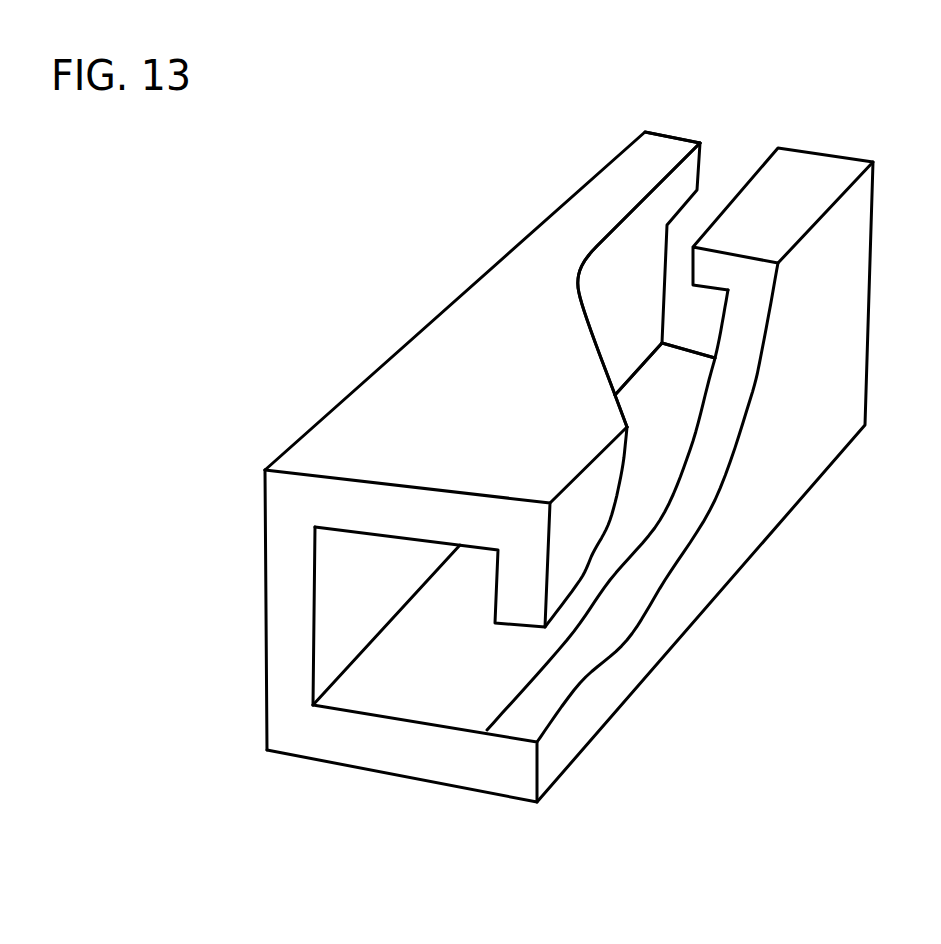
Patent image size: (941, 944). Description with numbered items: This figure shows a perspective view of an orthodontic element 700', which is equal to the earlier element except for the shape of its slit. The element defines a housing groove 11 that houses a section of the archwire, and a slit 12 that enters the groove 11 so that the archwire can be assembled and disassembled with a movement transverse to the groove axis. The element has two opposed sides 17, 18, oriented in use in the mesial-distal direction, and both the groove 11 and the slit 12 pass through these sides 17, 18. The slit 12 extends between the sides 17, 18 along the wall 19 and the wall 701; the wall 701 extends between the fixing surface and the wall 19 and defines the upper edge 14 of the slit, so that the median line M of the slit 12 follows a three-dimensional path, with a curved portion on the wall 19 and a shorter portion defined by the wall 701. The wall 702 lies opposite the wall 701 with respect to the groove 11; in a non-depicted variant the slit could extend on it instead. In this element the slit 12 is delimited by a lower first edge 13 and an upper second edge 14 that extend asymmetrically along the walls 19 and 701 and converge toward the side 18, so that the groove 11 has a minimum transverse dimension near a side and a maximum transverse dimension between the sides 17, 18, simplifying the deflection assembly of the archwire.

The orthodontic element 700' is at (540, 444).
The side 17 is at (675, 127).
The median line M is at (650, 456).
The slit 12 is at (640, 444).
The second edge 14 is at (646, 285).
The wall 701 is at (398, 518).
The wall 702 is at (408, 748).
The side 18 is at (286, 518).
The housing groove 11 is at (340, 605).
The first edge 13 is at (704, 490).
The wall 19 is at (812, 460).